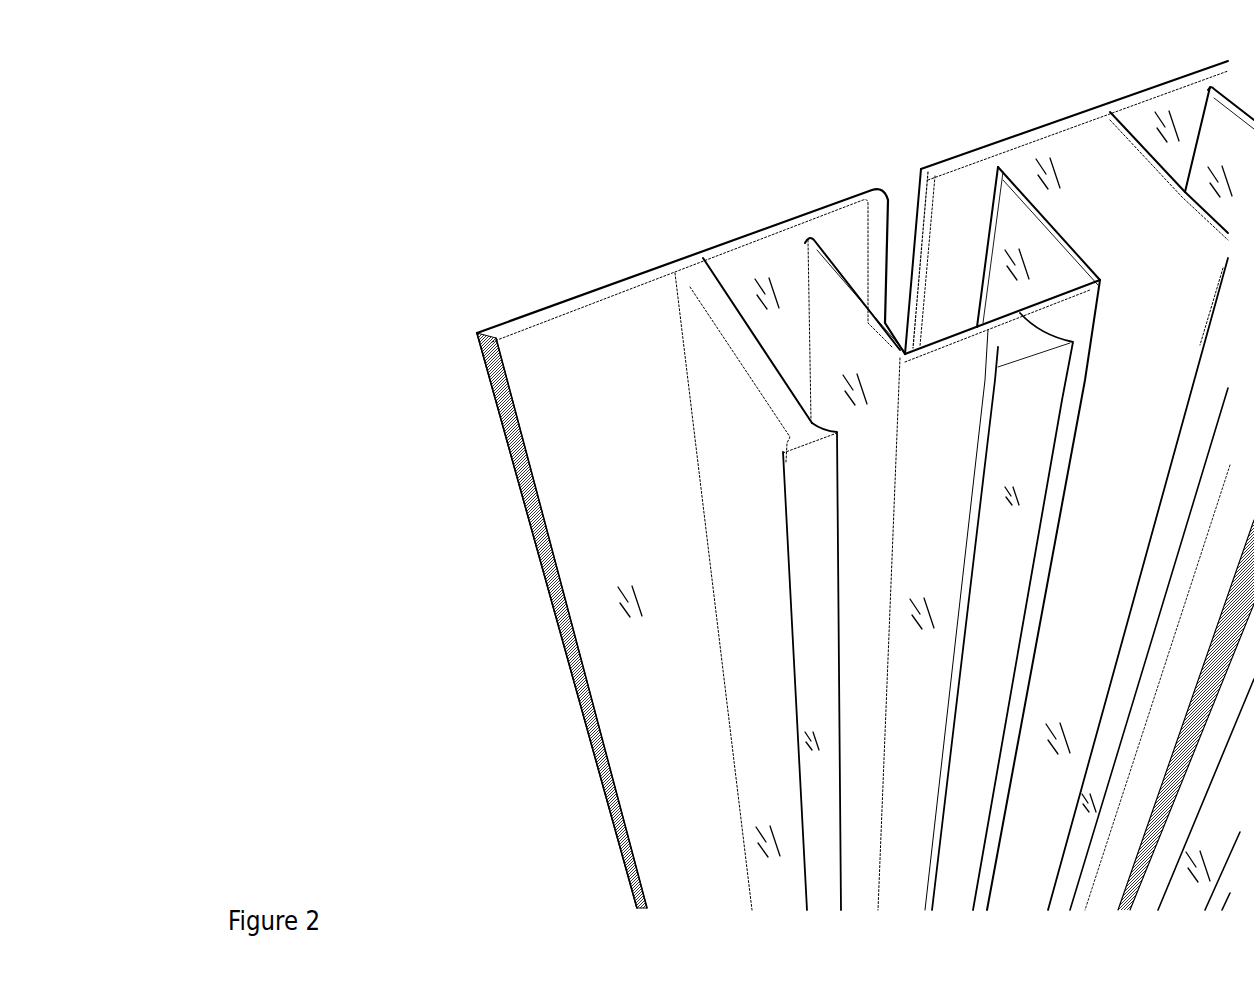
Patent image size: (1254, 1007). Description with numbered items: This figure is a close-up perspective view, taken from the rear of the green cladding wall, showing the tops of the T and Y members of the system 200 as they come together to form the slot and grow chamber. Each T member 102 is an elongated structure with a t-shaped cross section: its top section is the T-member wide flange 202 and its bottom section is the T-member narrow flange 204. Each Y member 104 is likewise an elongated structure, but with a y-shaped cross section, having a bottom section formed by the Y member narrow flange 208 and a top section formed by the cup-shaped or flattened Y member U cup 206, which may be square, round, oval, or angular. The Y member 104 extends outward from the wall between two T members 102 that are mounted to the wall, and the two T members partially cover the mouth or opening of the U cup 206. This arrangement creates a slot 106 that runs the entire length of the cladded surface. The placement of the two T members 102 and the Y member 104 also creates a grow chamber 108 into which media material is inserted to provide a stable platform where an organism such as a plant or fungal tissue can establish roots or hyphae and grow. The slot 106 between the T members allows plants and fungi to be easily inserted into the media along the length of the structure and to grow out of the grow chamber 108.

The system 200 is at (378, 172).
The T member 102 is at (617, 675).
The Y member 104 is at (1058, 232).
The slot 106 is at (895, 190).
The grow chamber 108 is at (963, 210).
The T-member wide flange 202 is at (645, 278).
The T-member narrow flange 204 is at (805, 562).
The Y member U cup 206 is at (833, 313).
The Y member narrow flange 208 is at (1015, 452).